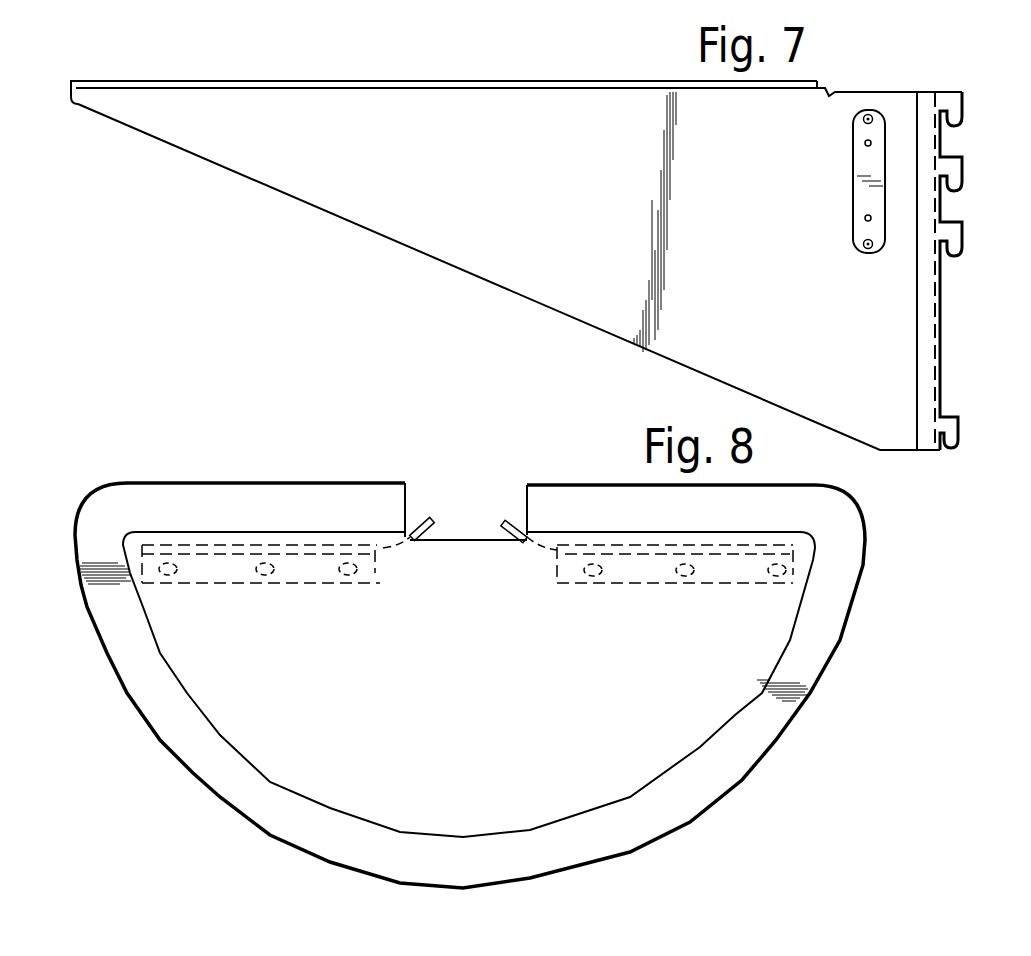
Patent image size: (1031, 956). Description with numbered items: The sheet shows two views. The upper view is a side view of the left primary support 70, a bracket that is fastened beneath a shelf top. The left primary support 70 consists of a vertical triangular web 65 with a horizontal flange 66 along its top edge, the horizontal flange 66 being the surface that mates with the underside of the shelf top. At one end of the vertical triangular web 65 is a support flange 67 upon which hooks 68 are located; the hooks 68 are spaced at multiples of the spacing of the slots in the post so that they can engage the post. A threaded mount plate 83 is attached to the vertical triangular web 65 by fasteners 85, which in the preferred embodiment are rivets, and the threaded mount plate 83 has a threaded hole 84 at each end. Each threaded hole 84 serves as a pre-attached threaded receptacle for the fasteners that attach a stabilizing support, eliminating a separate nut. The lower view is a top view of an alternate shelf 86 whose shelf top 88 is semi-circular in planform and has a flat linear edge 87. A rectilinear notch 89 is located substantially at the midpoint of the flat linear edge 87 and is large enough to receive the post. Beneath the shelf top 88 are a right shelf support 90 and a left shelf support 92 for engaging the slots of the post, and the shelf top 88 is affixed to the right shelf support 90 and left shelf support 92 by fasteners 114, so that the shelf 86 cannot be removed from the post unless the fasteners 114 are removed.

In FIG. 7, the left primary support 70 is at (592, 41).
In FIG. 7, the horizontal flange 66 is at (295, 81).
In FIG. 7, the vertical triangular web 65 is at (393, 241).
In FIG. 7, the support flange 67 is at (932, 92).
In FIG. 7, the hooks 68 is at (964, 113).
In FIG. 7, the threaded mount plate 83 is at (852, 195).
In FIG. 7, the threaded hole 84 is at (858, 112).
In FIG. 7, the fasteners 85 is at (864, 143).
In FIG. 8, the shelf 86 is at (183, 808).
In FIG. 8, the flat linear edge 87 is at (222, 480).
In FIG. 8, the shelf top 88 is at (107, 647).
In FIG. 8, the rectilinear notch 89 is at (478, 493).
In FIG. 8, the right shelf support 90 is at (511, 521).
In FIG. 8, the left shelf support 92 is at (418, 521).
In FIG. 8, the fasteners 114 is at (265, 577).